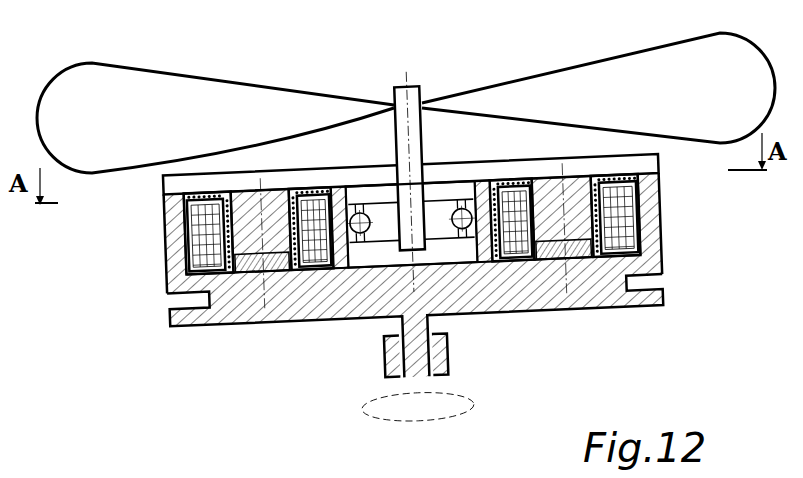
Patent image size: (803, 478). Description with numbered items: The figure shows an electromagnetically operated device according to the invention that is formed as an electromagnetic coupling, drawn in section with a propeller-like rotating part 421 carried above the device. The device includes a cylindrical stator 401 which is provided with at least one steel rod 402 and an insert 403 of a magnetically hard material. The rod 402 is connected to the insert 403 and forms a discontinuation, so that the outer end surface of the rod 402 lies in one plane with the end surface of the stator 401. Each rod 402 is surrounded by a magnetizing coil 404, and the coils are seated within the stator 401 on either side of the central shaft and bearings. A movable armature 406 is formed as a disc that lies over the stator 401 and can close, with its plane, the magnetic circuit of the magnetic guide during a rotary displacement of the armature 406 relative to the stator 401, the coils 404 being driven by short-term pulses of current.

The propeller blade 421 is at (197, 115).
The movable armature 406 is at (181, 188).
The cylindrical stator 401 is at (173, 250).
The steel rod 402 is at (572, 198).
The insert 403 is at (622, 262).
The magnetizing coil 404 is at (613, 210).